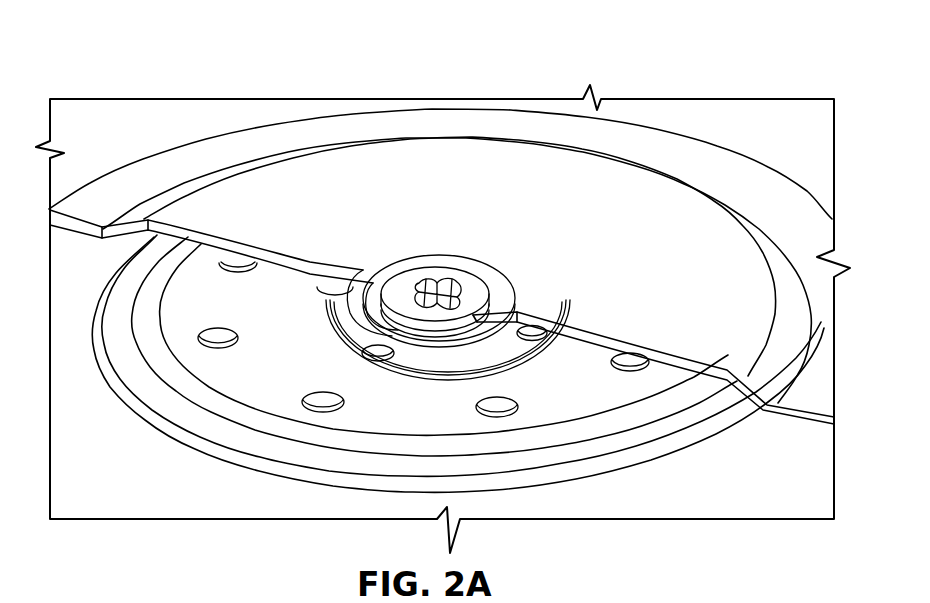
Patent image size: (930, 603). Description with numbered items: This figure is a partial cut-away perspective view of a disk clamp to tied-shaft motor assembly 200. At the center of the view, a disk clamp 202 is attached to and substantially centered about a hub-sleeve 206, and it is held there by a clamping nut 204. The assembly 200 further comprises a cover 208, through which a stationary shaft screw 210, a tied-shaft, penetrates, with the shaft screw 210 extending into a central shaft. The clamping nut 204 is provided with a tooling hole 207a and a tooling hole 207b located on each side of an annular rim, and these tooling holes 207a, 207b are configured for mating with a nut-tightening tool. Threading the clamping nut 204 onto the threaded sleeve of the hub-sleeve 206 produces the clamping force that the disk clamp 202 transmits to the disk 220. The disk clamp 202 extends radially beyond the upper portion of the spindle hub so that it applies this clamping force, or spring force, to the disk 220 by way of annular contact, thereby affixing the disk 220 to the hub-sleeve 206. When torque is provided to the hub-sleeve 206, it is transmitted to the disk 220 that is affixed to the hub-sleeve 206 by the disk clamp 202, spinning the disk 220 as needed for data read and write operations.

The assembly 200 is at (151, 46).
The disk clamp 202 is at (190, 303).
The clamping nut 204 is at (490, 350).
The hub-sleeve 206 is at (296, 336).
The tooling hole 207a is at (277, 290).
The tooling hole 207b is at (537, 330).
The cover 208 is at (387, 170).
The stationary shaft screw 210 is at (452, 280).
The disk 220 is at (87, 473).